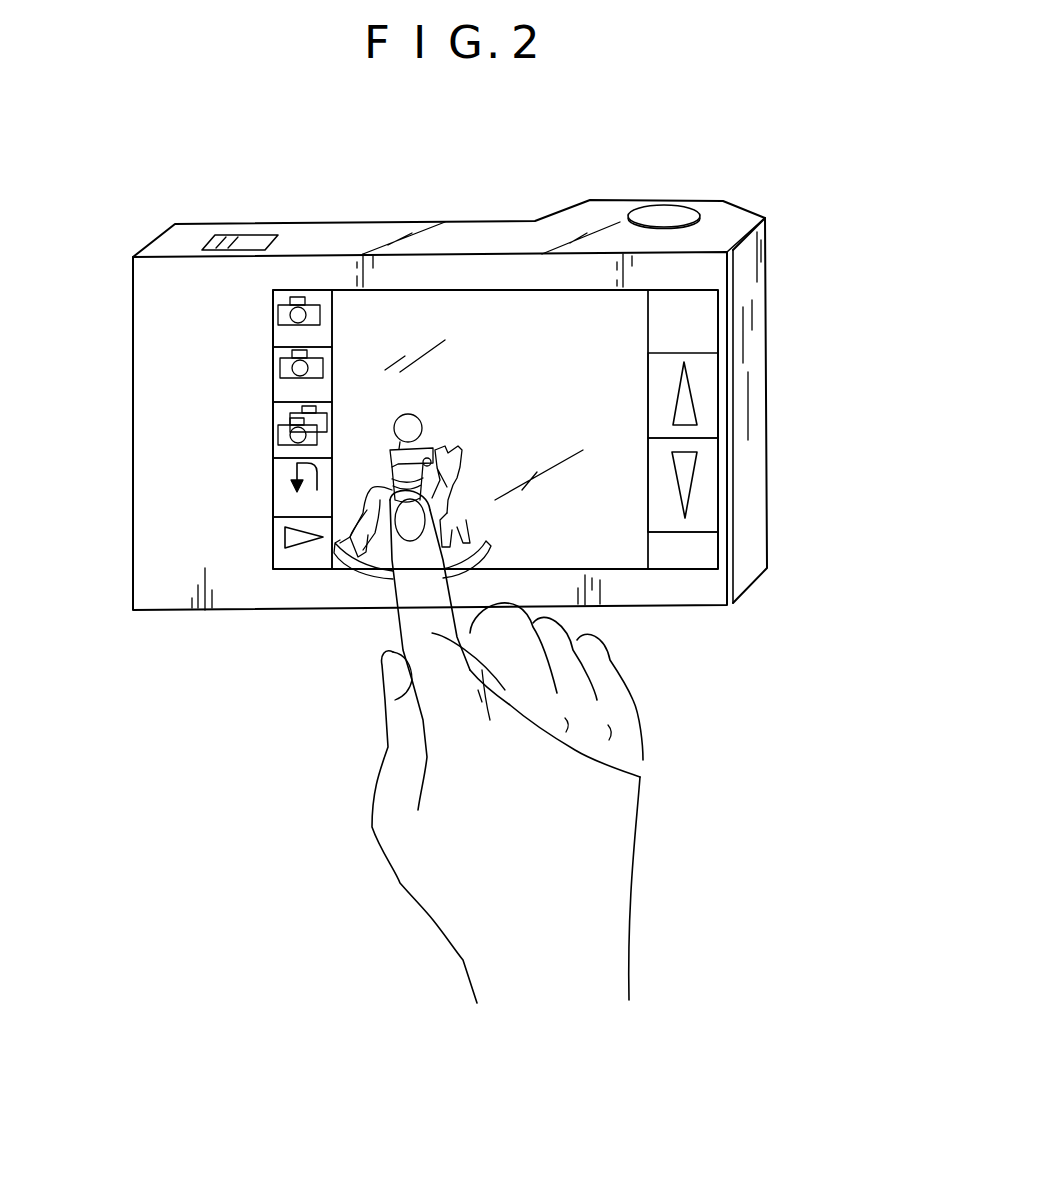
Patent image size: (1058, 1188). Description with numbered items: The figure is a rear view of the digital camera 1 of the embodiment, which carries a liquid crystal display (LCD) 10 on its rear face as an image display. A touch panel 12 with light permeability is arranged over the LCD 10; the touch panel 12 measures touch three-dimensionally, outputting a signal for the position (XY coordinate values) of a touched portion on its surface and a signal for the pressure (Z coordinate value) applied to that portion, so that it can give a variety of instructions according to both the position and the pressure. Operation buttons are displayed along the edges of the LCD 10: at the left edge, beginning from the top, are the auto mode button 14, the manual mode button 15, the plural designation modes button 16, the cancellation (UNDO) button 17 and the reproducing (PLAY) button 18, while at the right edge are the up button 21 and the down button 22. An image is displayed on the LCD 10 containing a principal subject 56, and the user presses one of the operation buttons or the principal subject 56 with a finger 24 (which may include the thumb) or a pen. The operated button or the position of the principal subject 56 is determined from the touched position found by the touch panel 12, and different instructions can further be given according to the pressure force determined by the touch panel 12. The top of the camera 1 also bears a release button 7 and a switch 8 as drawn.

The digital camera 1 is at (680, 191).
The shutter release button 7 is at (655, 218).
The power switch 8 is at (217, 228).
The liquid crystal display (LCD) 10 is at (617, 573).
The touch panel 12 is at (485, 292).
The auto mode button 14 is at (273, 312).
The manual mode button 15 is at (273, 367).
The plural designation modes button 16 is at (273, 433).
The cancellation (UNDO) button 17 is at (280, 488).
The reproducing (PLAY) button 18 is at (280, 557).
The up button 21 is at (703, 395).
The down button 22 is at (707, 475).
The finger 24 is at (640, 777).
The principal subject 56 is at (347, 573).